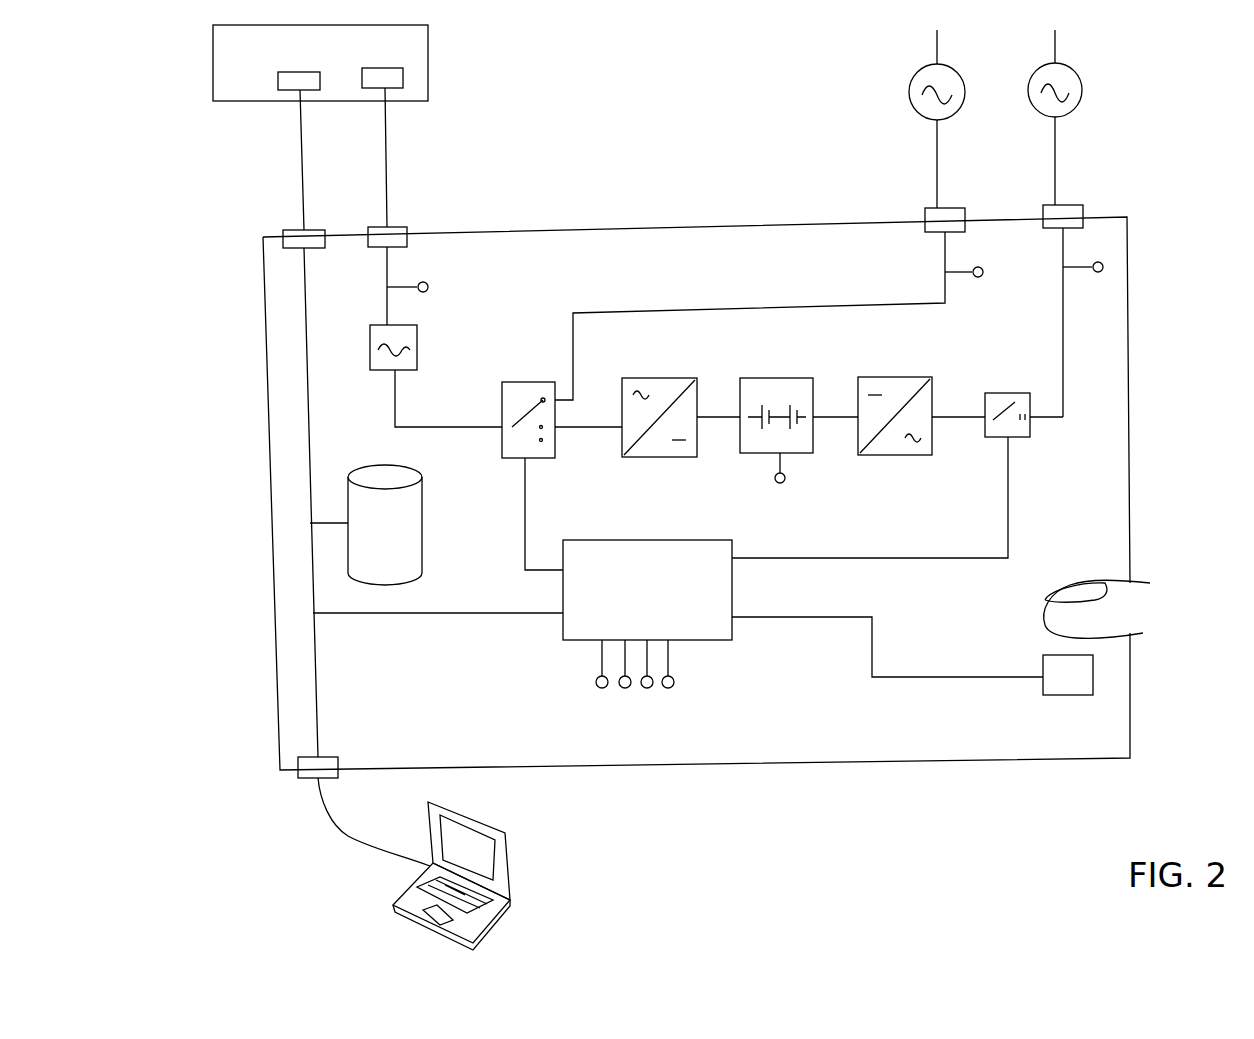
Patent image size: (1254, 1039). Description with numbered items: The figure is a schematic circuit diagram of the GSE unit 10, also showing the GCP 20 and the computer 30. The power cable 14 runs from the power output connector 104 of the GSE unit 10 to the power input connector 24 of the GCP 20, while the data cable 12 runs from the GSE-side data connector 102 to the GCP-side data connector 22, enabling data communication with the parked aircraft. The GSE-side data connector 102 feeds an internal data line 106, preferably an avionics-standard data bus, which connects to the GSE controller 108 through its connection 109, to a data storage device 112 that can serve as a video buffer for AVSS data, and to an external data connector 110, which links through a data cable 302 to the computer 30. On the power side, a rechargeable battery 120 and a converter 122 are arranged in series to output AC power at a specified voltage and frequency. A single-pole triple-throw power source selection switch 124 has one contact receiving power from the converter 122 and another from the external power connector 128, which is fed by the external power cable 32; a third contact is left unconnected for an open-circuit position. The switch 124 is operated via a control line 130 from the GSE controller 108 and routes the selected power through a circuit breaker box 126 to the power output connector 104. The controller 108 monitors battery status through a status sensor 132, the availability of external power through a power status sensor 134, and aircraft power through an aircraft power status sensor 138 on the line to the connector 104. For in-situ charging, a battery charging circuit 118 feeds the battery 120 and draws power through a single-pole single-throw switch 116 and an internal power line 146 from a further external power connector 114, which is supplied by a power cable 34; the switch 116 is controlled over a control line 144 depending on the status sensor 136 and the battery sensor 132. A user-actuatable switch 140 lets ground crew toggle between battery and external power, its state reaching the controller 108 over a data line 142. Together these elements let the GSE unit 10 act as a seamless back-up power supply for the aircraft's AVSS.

The GSE unit 10 is at (705, 213).
The GCP 20 is at (212, 68).
The GCP-side data connector 22 is at (298, 72).
The power input connector 24 is at (385, 68).
The data cable 12 is at (295, 155).
The power cable 14 is at (395, 150).
The computer 30 is at (528, 880).
The external power cable 32 is at (943, 160).
The power cable 34 is at (1068, 165).
The GSE-side data connector 102 is at (312, 228).
The power output connector 104 is at (413, 236).
The internal data line 106 is at (315, 390).
The GSE controller 108 is at (655, 540).
The connection 109 is at (418, 625).
The external data connector 110 is at (330, 755).
The data storage device 112 is at (410, 575).
The further external power connector 114 is at (1055, 207).
The single-pole single-throw switch 116 is at (1000, 394).
The battery charging circuit 118 is at (897, 376).
The rechargeable battery 120 is at (775, 378).
The converter 122 is at (660, 378).
The power source selection switch 124 is at (527, 380).
The circuit breaker box 126 is at (368, 352).
The external power connector 128 is at (940, 215).
The control line 130 is at (522, 510).
The status sensor 132 is at (786, 484).
The power status sensor 134 is at (985, 268).
The status sensor 136 is at (1098, 278).
The aircraft power status sensor 138 is at (432, 283).
The user-actuatable switch 140 is at (1065, 698).
The data line 142 is at (880, 685).
The control line 144 is at (1012, 485).
The internal power line 146 is at (1060, 320).
The data cable 302 is at (340, 835).